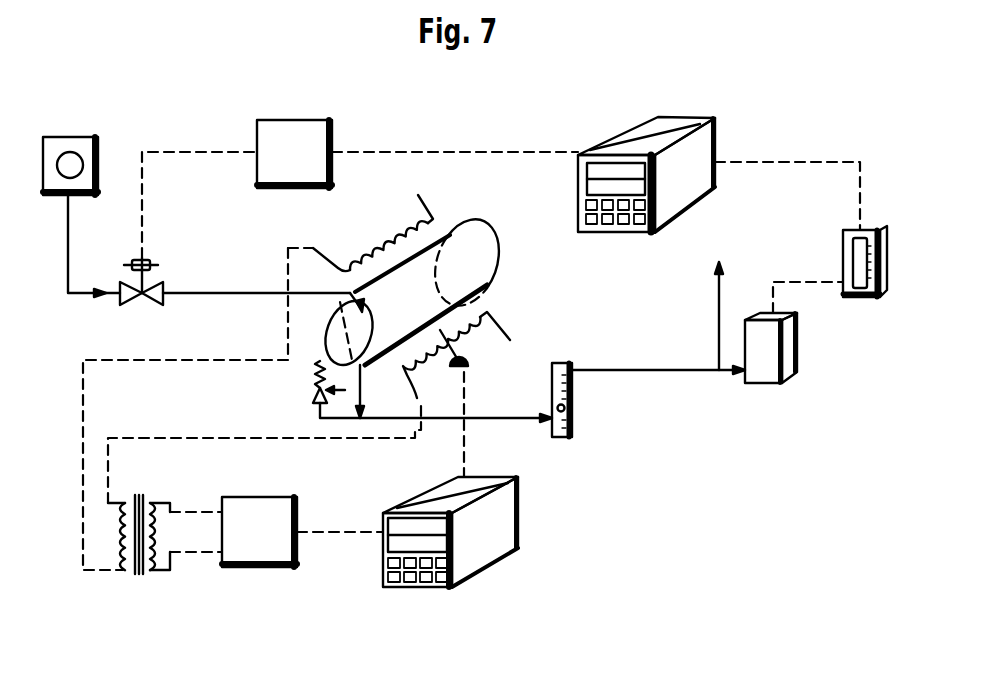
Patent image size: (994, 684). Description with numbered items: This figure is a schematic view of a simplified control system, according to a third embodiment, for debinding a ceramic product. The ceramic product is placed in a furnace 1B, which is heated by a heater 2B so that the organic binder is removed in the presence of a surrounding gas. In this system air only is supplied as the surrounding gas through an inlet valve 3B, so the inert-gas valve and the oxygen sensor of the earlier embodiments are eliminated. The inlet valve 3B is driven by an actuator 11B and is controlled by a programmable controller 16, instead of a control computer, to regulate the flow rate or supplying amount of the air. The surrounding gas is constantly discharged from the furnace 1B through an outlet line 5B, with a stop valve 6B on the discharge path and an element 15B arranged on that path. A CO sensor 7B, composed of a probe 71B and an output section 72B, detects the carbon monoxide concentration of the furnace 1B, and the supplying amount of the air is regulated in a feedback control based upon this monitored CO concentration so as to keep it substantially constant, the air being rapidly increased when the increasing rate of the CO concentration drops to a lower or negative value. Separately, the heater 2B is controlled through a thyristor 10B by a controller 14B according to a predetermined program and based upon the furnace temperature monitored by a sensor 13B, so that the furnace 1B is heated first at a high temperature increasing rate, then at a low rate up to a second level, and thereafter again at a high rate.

The furnace 1B is at (480, 258).
The heater 2B is at (433, 219).
The inlet valve 3B is at (152, 305).
The outlet line 5B is at (672, 373).
The stop valve 6B is at (315, 389).
The CO sensor 7B is at (870, 302).
The thyristor 10B is at (273, 570).
The actuator 11B is at (330, 125).
The sensor 13B is at (470, 367).
The controller 14B is at (482, 563).
The pressure sensor 15B is at (562, 440).
The programmable controller 16 is at (670, 203).
The probe 71B is at (786, 381).
The output section 72B is at (843, 237).